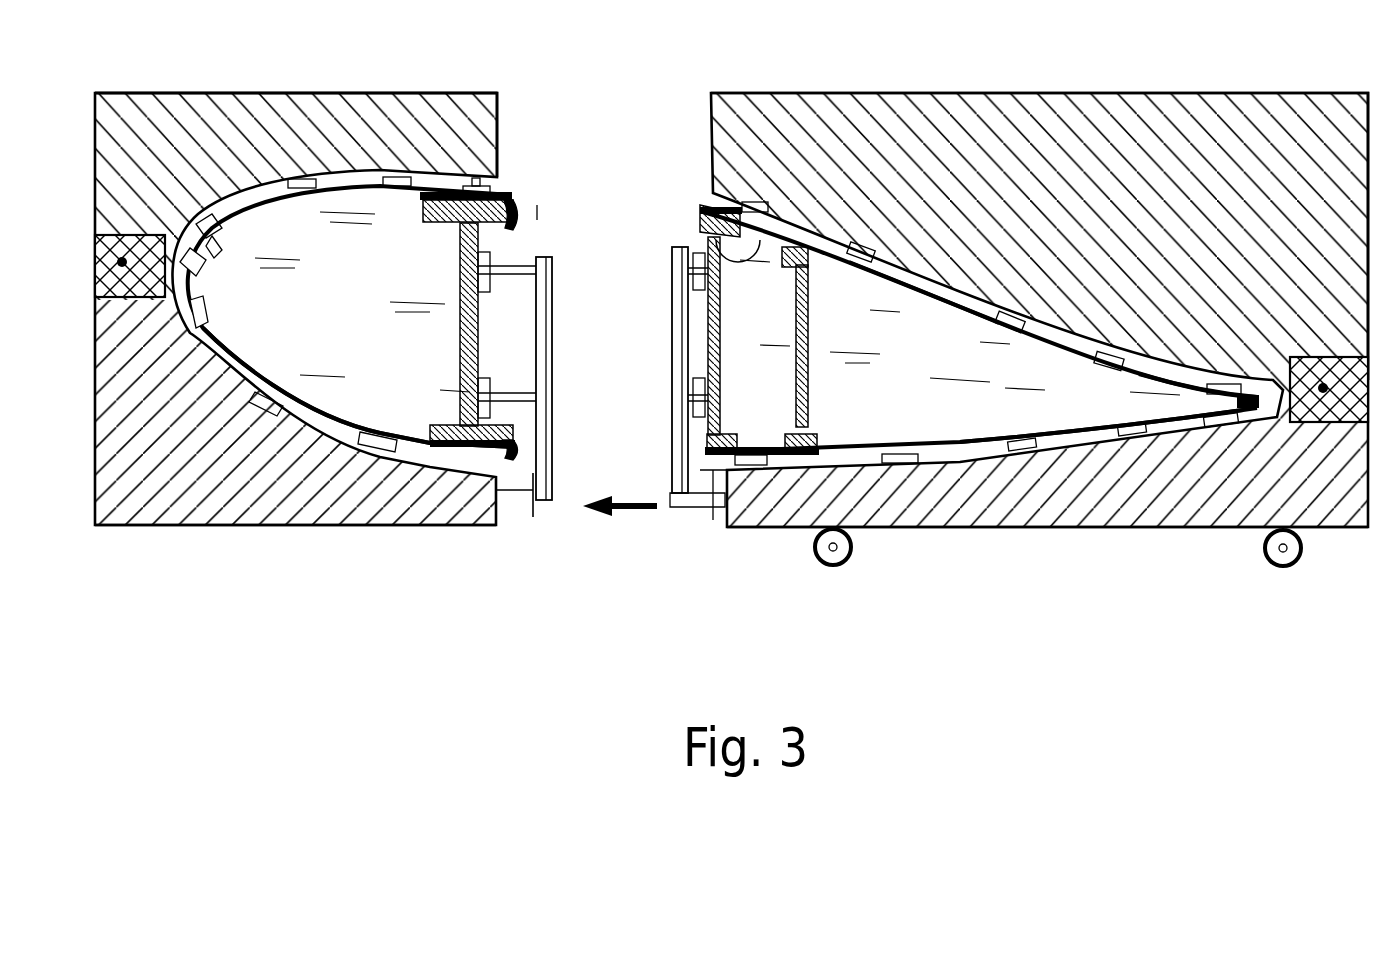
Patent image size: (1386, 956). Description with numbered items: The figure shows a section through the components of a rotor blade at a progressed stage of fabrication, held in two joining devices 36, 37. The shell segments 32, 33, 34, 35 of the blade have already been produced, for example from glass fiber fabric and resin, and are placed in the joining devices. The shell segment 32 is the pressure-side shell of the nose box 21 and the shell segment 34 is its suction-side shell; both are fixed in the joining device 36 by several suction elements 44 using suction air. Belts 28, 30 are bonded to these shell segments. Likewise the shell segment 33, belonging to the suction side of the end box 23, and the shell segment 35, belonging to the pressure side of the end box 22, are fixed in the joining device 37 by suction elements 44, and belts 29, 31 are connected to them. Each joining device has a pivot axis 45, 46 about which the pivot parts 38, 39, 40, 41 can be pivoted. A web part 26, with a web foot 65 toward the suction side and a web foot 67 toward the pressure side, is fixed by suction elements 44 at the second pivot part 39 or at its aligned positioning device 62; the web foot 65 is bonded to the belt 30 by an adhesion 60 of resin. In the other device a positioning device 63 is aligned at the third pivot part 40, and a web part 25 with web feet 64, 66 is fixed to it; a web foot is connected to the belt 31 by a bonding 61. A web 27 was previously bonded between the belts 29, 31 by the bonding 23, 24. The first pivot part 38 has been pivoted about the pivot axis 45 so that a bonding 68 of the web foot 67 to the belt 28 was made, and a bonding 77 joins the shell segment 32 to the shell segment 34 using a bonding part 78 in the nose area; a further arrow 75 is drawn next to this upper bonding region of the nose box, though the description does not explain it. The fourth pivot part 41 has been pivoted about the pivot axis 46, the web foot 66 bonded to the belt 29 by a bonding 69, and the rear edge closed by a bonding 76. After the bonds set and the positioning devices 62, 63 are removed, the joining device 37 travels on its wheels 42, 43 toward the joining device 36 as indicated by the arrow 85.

The nose box 21 is at (212, 346).
The end box 22 is at (977, 318).
The bonding 23 is at (810, 455).
The bonding 24 is at (873, 345).
The web part 25 is at (808, 262).
The web part 26 is at (462, 430).
The web 27 is at (927, 300).
The belt 28 is at (497, 198).
The belt 29 is at (770, 244).
The belt 30 is at (480, 452).
The belt 31 is at (804, 440).
The shell segment 32 is at (296, 52).
The shell segment 33 is at (972, 447).
The shell segment 34 is at (342, 430).
The shell segment 35 is at (1020, 320).
The joining device 36 is at (233, 548).
The joining device 37 is at (1088, 553).
The first pivot part 38 is at (314, 118).
The second pivot part 39 is at (298, 499).
The third pivot part 40 is at (1132, 490).
The fourth pivot part 41 is at (1165, 158).
The wheel 42 is at (824, 565).
The wheel 43 is at (1288, 566).
The suction element 44 is at (262, 400).
The pivot axis 45 is at (121, 256).
The pivot axis 46 is at (1322, 422).
The adhesion 60 is at (504, 470).
The bonding 61 is at (722, 470).
The positioning device 62 is at (549, 500).
The positioning device 63 is at (670, 493).
The web foot 64 is at (692, 507).
The web foot 65 is at (522, 490).
The web foot 66 is at (730, 236).
The web foot 67 is at (523, 213).
The bonding 68 is at (511, 205).
The bonding 69 is at (713, 205).
The direction arrow 75 is at (556, 212).
The bonding 76 is at (542, 452).
The bonding 77 is at (183, 248).
The bonding part 78 is at (212, 244).
The arrow 85 is at (624, 514).